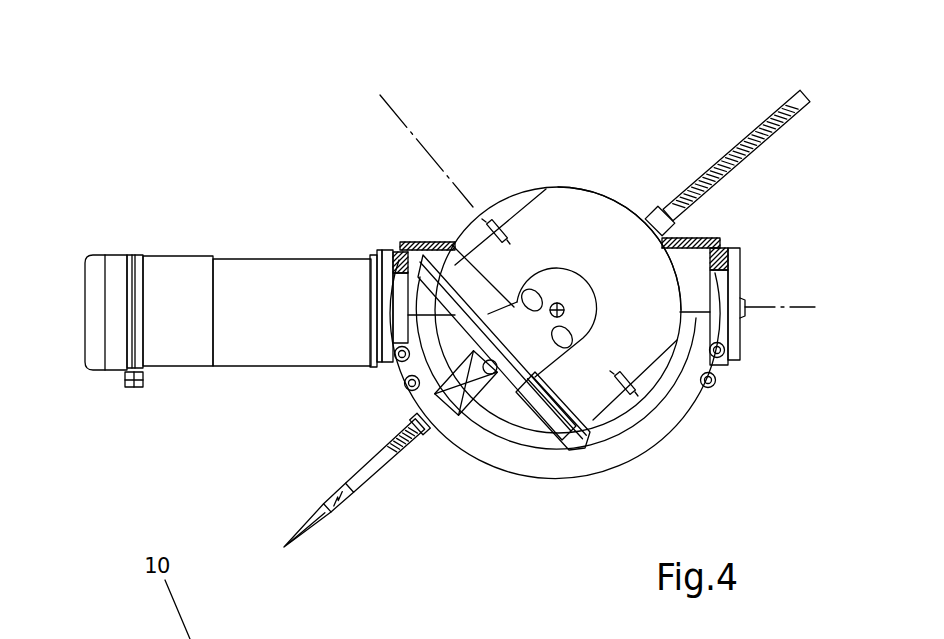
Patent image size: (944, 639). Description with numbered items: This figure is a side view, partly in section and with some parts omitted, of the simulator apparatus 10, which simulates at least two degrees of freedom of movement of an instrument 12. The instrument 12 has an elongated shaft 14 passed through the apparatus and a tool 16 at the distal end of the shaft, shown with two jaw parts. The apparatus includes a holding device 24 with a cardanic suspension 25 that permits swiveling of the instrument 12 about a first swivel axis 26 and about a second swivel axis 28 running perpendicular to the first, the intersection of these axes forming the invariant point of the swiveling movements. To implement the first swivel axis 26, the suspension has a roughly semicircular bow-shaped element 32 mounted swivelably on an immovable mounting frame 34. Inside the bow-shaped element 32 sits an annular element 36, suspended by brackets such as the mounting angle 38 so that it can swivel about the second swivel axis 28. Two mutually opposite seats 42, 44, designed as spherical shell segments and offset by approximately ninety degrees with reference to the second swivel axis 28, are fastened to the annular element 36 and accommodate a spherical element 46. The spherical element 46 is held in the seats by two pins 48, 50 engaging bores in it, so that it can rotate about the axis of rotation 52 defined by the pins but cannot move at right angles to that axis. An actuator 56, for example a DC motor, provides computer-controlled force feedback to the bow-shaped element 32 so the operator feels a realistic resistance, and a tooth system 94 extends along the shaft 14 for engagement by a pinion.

The simulator apparatus 10 is at (303, 207).
The instrument 12 is at (673, 180).
The elongated shaft 14 is at (372, 468).
The tool 16 is at (295, 522).
The holding device 24 is at (563, 220).
The cardanic suspension 25 is at (553, 450).
The first swivel axis 26 is at (803, 308).
The second swivel axis 28 is at (560, 310).
The bow-shaped element 32 is at (660, 440).
The mounting frame 34 is at (695, 238).
The annular element 36 is at (483, 302).
The mounting angle 38 is at (533, 357).
The seat 42 is at (651, 376).
The seat 44 is at (508, 212).
The spherical element 46 is at (582, 215).
The pin 48 is at (470, 227).
The pin 50 is at (625, 395).
The axis of rotation 52 is at (430, 150).
The actuator 56 is at (248, 340).
The tooth system 94 is at (733, 158).